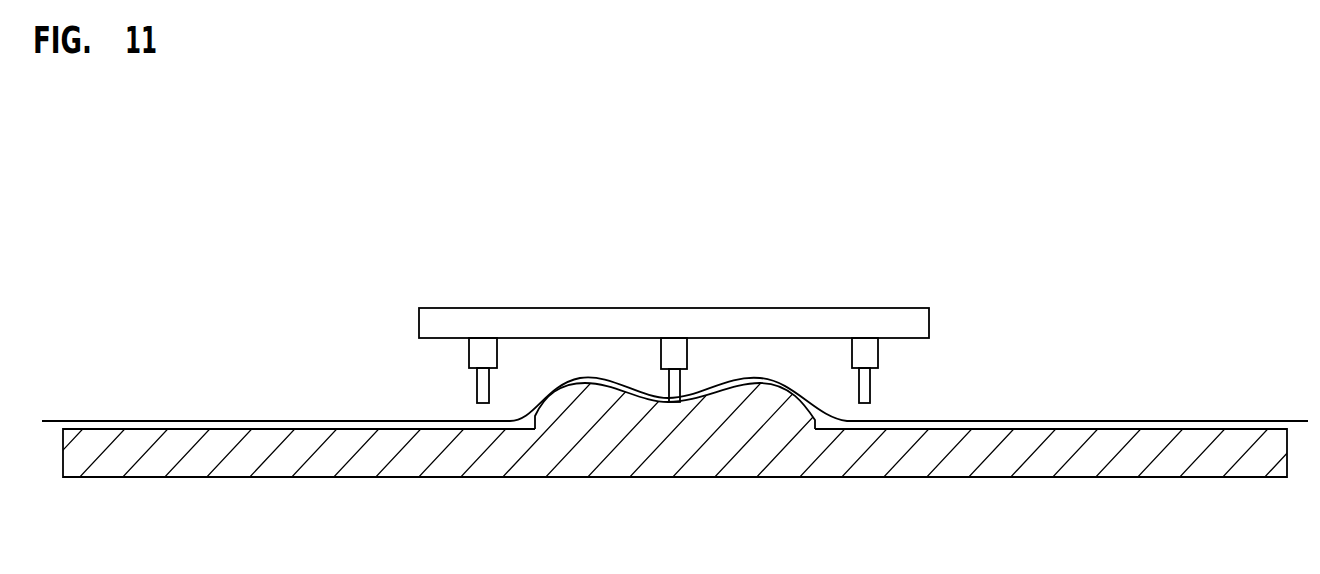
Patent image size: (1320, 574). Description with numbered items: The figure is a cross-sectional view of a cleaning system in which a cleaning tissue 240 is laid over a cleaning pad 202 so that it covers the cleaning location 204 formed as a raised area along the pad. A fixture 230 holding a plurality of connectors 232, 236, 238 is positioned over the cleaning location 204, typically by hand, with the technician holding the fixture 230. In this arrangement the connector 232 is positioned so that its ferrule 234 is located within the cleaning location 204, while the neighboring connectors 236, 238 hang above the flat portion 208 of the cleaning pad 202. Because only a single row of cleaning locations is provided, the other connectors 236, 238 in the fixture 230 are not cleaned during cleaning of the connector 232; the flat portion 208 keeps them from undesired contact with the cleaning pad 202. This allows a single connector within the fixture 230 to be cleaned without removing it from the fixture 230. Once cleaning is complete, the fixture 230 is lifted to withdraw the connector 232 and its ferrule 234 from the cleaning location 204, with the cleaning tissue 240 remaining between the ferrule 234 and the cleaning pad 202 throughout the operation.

The cleaning pad 202 is at (937, 477).
The cleaning location 204 is at (738, 390).
The flat portion 208 is at (1160, 429).
The fixture 230 is at (805, 308).
The connector 232 is at (687, 356).
The ferrule 234 is at (476, 385).
The connector 236 is at (878, 357).
The connector 238 is at (497, 356).
The cleaning tissue 240 is at (51, 421).